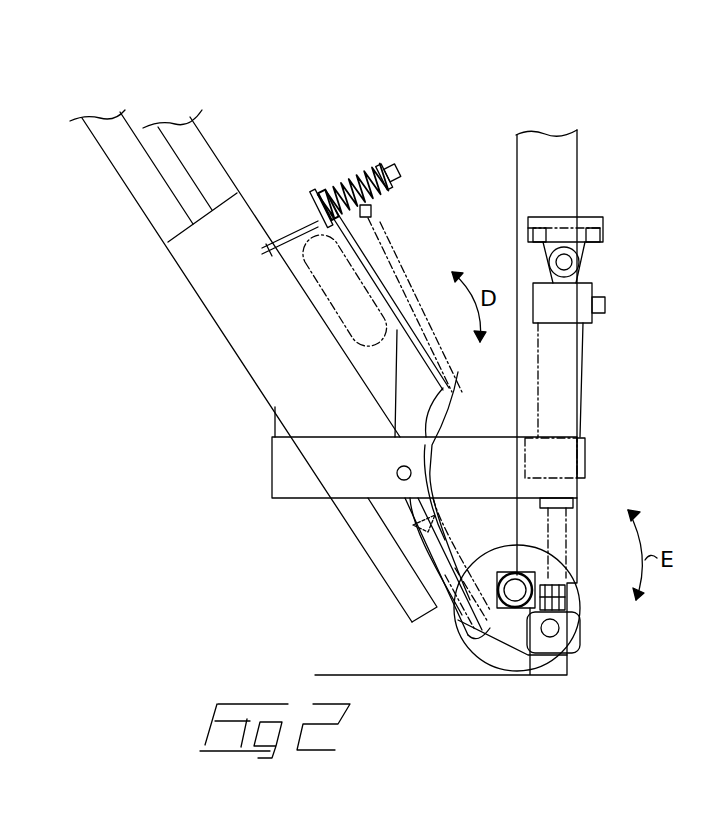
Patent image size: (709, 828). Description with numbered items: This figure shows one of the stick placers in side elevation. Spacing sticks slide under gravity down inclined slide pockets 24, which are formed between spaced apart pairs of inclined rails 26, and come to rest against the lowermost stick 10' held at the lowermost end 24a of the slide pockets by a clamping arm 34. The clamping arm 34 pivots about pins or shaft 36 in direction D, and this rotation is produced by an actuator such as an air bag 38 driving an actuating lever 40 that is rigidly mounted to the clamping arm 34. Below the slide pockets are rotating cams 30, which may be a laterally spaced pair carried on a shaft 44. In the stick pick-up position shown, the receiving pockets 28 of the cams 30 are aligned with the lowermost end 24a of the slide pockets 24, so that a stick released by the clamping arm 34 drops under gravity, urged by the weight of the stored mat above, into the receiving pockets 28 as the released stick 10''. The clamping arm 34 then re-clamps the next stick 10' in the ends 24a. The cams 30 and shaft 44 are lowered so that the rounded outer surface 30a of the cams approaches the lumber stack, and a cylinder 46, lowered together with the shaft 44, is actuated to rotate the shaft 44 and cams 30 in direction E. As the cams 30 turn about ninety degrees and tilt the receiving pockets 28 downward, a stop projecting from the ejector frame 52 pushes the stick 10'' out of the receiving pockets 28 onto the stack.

The downstream-most spacing stick 10' is at (351, 546).
The released spacing stick 10'' is at (486, 682).
The slide pockets 24 is at (140, 128).
The lowermost end of slide pockets 24a is at (427, 578).
The inclined rails 26 is at (193, 148).
The receiving pockets 28 is at (447, 618).
The rotating cams 30 is at (515, 653).
The rounded outer surface 30a is at (580, 643).
The clamping arm 34 is at (460, 422).
The pins or shaft 36 is at (397, 473).
The air bag 38 is at (330, 285).
The actuating lever 40 is at (347, 240).
The shaft 44 is at (517, 585).
The cylinder 46 is at (583, 336).
The ejector frame 52 is at (575, 155).